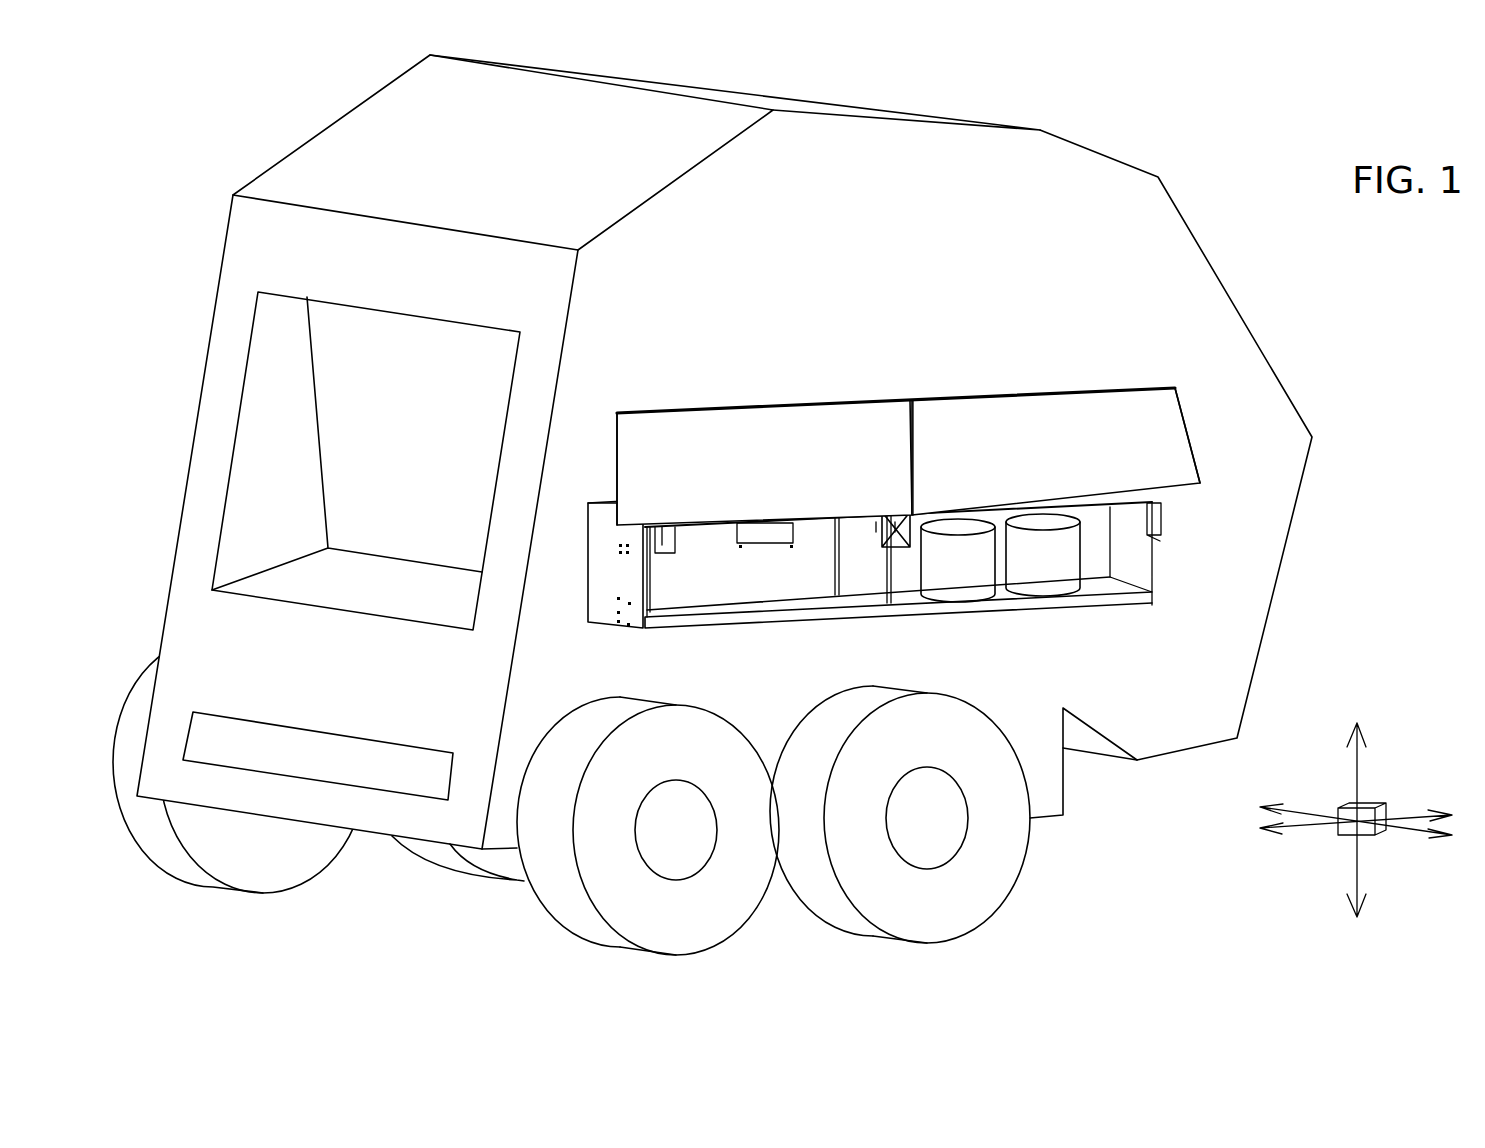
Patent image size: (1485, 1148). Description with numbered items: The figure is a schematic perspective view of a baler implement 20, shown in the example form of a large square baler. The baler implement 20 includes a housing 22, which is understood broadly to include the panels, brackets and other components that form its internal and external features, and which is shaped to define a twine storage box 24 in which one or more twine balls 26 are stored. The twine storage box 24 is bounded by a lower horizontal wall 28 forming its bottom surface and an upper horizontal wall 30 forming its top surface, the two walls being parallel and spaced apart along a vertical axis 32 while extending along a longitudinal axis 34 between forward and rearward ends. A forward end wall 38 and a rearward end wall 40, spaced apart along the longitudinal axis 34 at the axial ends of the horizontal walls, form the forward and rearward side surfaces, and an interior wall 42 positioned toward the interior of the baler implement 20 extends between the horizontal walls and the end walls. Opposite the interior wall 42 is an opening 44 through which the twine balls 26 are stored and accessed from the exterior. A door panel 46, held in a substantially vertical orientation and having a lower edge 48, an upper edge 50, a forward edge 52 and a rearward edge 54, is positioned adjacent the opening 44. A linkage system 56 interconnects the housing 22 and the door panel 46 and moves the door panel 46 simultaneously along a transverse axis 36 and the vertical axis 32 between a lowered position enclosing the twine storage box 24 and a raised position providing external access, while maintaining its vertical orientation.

The baler implement 20 is at (1153, 98).
The housing 22 is at (1238, 312).
The twine storage box 24 is at (608, 570).
The twine balls 26 is at (1045, 555).
The lower horizontal wall 28 is at (757, 607).
The upper horizontal wall 30 is at (612, 505).
The vertical axis 32 is at (1355, 767).
The longitudinal axis 34 is at (1417, 810).
The transverse axis 36 is at (1403, 837).
The forward end wall 38 is at (1155, 558).
The rearward end wall 40 is at (603, 607).
The interior wall 42 is at (755, 568).
The opening 44 is at (652, 583).
The door panel 46 is at (920, 424).
The lower edge 48 is at (810, 523).
The upper edge 50 is at (983, 398).
The forward edge 52 is at (1186, 428).
The rearward edge 54 is at (617, 460).
The linkage system 56 is at (876, 527).